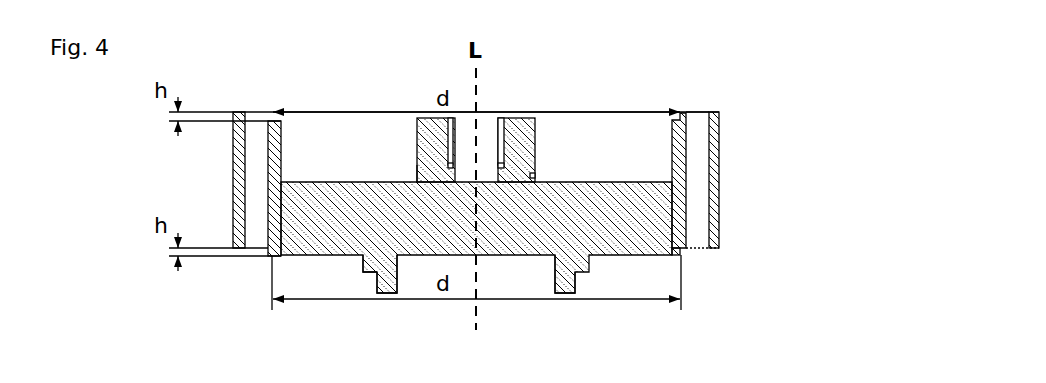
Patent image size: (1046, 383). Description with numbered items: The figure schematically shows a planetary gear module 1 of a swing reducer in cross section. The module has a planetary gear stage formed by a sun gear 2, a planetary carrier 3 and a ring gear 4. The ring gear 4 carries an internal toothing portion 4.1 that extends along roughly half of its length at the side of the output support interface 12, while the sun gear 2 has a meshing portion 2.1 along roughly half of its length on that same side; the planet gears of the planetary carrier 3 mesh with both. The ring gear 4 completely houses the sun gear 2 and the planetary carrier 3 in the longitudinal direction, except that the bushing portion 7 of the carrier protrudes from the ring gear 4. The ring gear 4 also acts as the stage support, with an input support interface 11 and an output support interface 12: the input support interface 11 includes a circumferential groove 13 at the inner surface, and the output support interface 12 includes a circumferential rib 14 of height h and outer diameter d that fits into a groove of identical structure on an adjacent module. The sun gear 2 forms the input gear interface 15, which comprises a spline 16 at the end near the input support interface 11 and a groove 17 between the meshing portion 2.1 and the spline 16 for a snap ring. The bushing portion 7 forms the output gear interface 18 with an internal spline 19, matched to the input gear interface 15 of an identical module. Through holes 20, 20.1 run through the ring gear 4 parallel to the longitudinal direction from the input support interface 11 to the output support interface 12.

The planetary gear module 1 is at (886, 201).
The sun gear 2 is at (515, 188).
The meshing portion 2.1 is at (538, 197).
The planetary carrier 3 is at (629, 174).
The ring gear 4 is at (708, 132).
The internal toothing portion 4.1 is at (282, 197).
The bushing portion 7 is at (380, 262).
The input support interface 11 is at (707, 108).
The output support interface 12 is at (705, 257).
The groove 13 is at (681, 113).
The rib 14 is at (681, 255).
The input gear interface 15 is at (558, 126).
The spline 16 is at (418, 135).
The groove 17 is at (418, 177).
The output gear interface 18 is at (391, 302).
The spline 19 is at (557, 273).
The through hole 20 is at (754, 196).
The through hole 20.1 is at (255, 165).